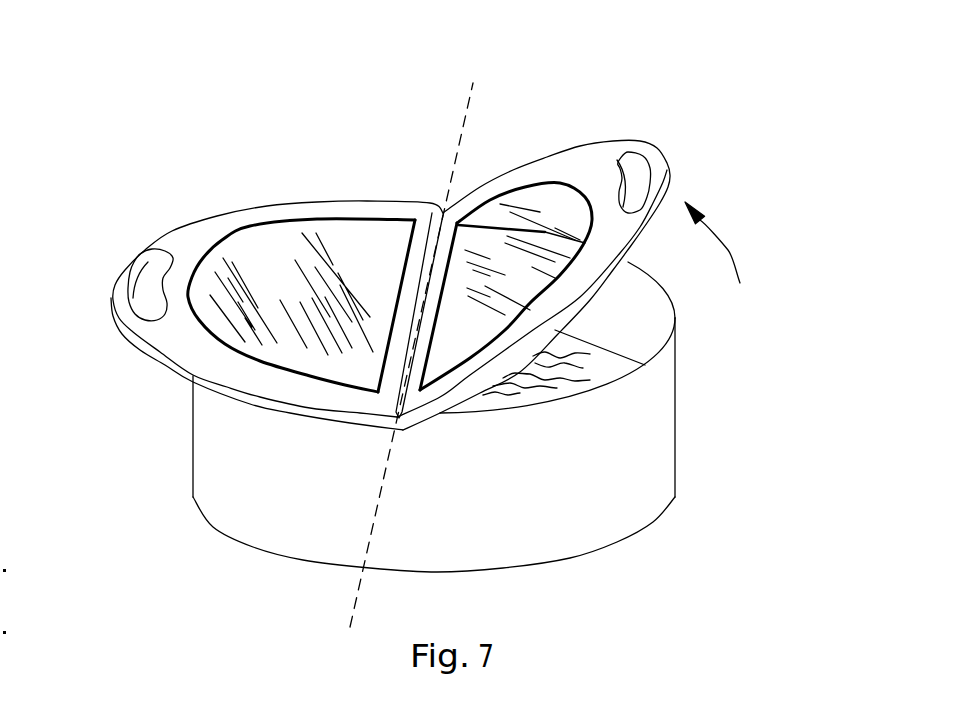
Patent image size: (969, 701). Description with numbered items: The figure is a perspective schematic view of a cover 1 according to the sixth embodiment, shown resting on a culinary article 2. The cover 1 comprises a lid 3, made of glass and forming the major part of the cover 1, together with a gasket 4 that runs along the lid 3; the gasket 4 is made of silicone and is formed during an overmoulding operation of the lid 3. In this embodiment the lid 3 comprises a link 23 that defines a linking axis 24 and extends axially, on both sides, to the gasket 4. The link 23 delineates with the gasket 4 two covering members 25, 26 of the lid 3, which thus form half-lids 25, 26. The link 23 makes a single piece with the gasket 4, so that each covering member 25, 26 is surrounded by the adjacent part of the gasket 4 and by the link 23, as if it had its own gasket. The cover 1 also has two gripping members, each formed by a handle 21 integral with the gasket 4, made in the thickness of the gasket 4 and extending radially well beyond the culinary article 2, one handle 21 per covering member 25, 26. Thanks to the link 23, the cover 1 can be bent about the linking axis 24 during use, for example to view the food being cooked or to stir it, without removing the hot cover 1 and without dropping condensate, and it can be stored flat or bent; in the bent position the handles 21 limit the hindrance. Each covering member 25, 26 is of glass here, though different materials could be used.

The cover 1 is at (382, 188).
The culinary article 2 is at (598, 510).
The lid 3 is at (300, 338).
The gasket 4 is at (240, 227).
The handle 21 is at (147, 283).
The link 23 is at (395, 397).
The linking axis 24 is at (465, 118).
The covering member 25 is at (302, 255).
The covering member 26 is at (550, 213).